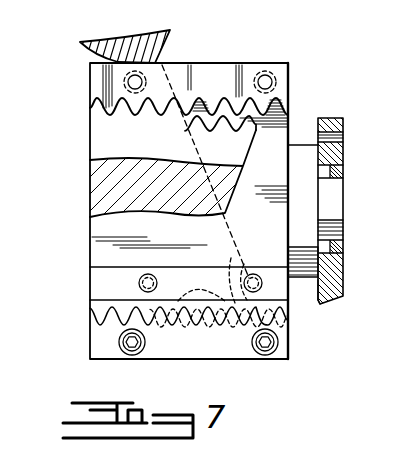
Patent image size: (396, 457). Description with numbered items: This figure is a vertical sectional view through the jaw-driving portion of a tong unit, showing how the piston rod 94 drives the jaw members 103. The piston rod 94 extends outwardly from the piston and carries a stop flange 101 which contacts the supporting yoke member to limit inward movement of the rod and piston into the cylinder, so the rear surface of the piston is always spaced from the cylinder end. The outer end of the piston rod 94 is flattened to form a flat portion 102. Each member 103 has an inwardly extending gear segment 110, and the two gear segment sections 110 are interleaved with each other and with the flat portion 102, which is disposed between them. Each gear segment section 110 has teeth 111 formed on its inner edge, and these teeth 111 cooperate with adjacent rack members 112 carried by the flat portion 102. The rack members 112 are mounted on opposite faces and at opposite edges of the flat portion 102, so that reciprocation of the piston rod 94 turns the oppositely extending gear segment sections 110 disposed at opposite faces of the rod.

The piston rod 94 is at (330, 192).
The stop flange 101 is at (308, 284).
The flat portion of the piston rod 102 is at (289, 125).
The member 103 is at (82, 41).
The gear segment 110 is at (100, 128).
The teeth 111 is at (191, 128).
The rack members 112 is at (218, 80).